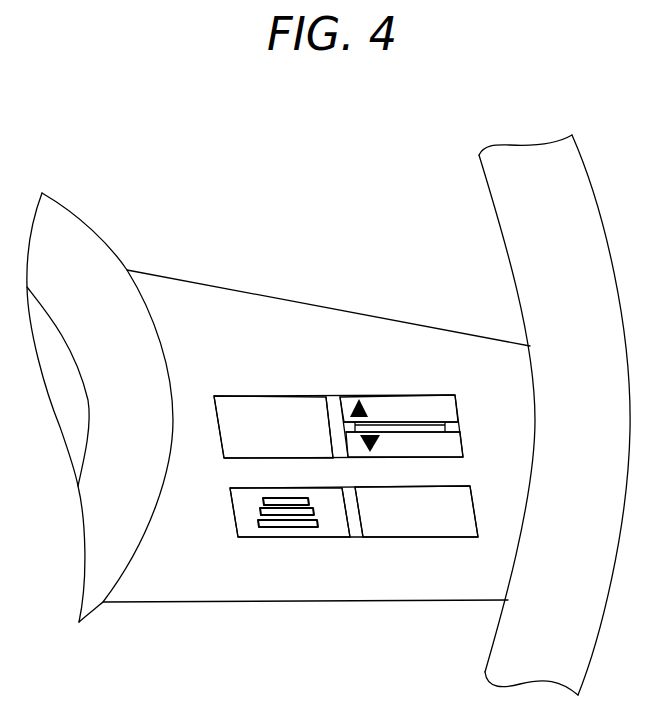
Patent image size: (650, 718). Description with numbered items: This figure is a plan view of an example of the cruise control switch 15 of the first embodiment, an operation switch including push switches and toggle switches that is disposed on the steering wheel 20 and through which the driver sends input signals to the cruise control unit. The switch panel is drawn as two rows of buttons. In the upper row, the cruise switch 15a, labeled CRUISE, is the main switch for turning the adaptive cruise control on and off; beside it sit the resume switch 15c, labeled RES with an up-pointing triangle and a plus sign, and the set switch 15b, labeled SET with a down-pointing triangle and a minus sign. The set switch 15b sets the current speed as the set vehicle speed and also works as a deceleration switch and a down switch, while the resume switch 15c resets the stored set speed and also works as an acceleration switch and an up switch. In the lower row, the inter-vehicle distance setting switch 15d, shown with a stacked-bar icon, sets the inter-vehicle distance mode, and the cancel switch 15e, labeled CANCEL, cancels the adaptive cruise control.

The steering wheel 20 is at (283, 196).
The cruise control switch 15 is at (341, 324).
The cruise switch 15a is at (274, 394).
The set switch 15b is at (461, 437).
The resume switch 15c is at (456, 394).
The inter-vehicle distance setting switch 15d is at (312, 537).
The cancel switch 15e is at (408, 537).